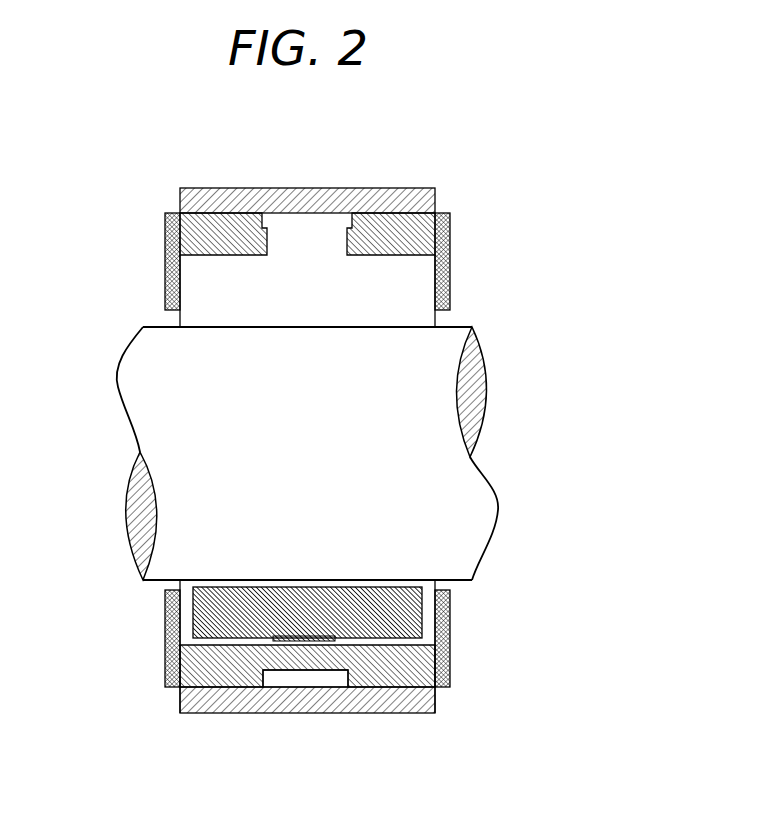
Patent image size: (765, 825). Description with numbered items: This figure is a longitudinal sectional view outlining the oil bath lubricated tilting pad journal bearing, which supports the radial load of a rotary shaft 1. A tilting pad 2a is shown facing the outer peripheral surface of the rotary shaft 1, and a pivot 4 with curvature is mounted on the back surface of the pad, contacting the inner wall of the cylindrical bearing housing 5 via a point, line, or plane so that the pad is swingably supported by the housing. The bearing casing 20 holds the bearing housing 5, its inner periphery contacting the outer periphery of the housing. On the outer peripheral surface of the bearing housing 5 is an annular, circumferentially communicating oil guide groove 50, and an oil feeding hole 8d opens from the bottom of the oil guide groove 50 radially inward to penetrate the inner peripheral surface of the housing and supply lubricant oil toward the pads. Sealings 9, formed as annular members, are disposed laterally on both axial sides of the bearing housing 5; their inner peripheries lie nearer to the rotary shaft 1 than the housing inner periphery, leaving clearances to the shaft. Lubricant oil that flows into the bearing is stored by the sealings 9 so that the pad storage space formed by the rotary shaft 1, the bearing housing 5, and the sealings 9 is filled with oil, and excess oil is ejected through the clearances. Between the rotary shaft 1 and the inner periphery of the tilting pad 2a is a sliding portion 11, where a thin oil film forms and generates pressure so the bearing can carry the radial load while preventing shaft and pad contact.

The rotary shaft 1 is at (447, 522).
The tilting pad 2a is at (383, 628).
The pivot 4 is at (322, 639).
The bearing housing 5 is at (180, 703).
The oil feeding hole 8d is at (310, 240).
The sealing 9 is at (165, 637).
The sliding portion 11 is at (272, 580).
The bearing casing 20 is at (243, 698).
The oil guide groove 50 is at (285, 222).